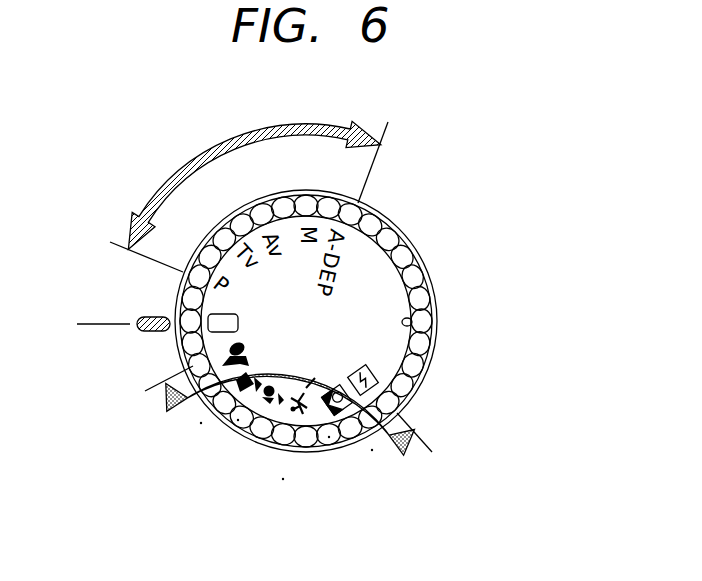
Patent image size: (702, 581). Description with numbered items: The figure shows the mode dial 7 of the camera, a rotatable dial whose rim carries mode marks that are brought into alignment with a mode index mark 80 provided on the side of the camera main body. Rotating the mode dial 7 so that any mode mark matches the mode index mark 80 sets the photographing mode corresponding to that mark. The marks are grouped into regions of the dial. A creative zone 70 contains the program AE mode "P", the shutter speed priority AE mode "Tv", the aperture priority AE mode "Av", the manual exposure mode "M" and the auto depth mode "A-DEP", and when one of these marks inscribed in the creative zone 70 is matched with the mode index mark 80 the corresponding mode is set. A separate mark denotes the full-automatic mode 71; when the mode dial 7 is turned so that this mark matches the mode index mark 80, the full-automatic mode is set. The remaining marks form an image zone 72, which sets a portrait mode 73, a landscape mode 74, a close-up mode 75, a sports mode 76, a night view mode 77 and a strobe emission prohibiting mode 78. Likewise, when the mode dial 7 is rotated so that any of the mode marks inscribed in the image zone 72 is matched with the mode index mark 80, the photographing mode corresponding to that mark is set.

The mode dial 7 is at (380, 313).
The creative zone 70 is at (238, 138).
The full-automatic mode 71 is at (178, 334).
The image zone 72 is at (283, 479).
The portrait mode 73 is at (181, 412).
The landscape mode 74 is at (201, 423).
The close-up mode 75 is at (238, 420).
The sports mode 76 is at (329, 437).
The night view mode 77 is at (372, 450).
The strobe emission prohibiting mode 78 is at (380, 377).
The mode index mark 80 is at (152, 317).